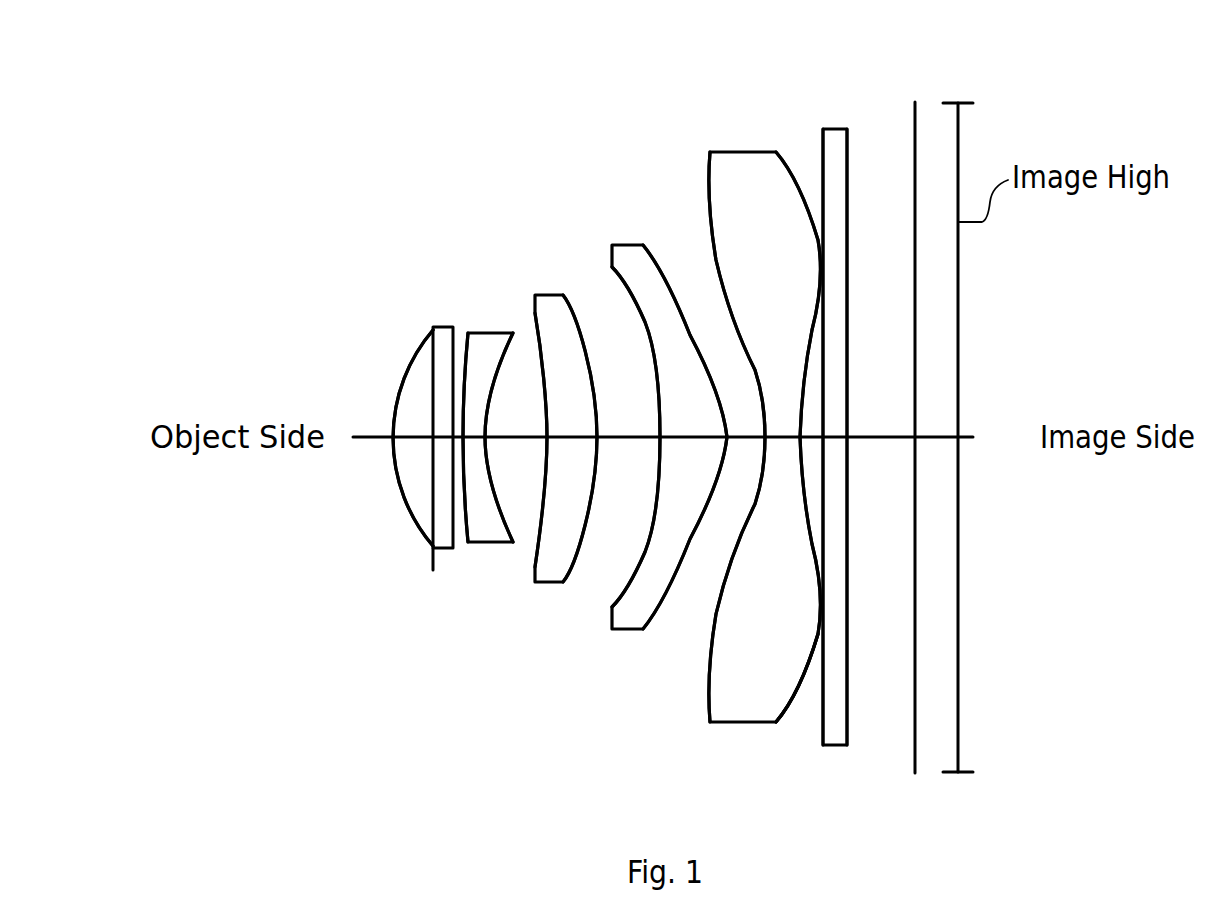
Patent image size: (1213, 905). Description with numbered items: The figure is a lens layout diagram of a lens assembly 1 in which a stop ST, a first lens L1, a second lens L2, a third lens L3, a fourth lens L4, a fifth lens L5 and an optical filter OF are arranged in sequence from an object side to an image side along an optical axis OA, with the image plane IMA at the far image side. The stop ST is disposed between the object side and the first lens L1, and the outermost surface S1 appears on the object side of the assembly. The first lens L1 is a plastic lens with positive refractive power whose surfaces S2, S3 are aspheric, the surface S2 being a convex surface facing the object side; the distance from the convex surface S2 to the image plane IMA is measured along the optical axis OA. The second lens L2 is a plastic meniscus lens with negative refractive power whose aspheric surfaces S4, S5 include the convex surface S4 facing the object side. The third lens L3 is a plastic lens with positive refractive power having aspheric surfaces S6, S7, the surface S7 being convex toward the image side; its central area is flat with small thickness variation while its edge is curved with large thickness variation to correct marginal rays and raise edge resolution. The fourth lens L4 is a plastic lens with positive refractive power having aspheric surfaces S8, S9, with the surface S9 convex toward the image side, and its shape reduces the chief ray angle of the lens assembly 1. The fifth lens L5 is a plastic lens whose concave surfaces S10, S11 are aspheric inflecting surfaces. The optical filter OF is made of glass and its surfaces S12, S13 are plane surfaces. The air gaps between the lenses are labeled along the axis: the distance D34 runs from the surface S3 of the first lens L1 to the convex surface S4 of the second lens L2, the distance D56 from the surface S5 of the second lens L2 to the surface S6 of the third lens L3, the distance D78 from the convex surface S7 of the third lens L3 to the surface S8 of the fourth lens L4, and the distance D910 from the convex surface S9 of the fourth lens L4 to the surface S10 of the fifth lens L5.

The lens assembly 1 is at (233, 134).
The optical axis OA is at (357, 438).
The stop ST is at (433, 327).
The first lens L1 is at (444, 327).
The second lens L2 is at (493, 333).
The third lens L3 is at (550, 295).
The fourth lens L4 is at (622, 245).
The fifth lens L5 is at (740, 152).
The optical filter OF is at (835, 129).
The image plane IMA is at (916, 102).
The object-side surface of first lens S1 is at (433, 570).
The surface S2 is at (405, 498).
The surface S3 is at (433, 570).
The surface S4 is at (478, 545).
The surface S5 is at (487, 545).
The surface S6 is at (540, 548).
The surface S7 is at (578, 565).
The surface S8 is at (624, 607).
The surface S9 is at (672, 583).
The surface S10 is at (728, 607).
The surface S11 is at (806, 700).
The surface S12 is at (823, 738).
The surface S13 is at (848, 718).
The distance D34 is at (457, 438).
The distance D56 is at (520, 440).
The distance D78 is at (617, 438).
The distance D910 is at (742, 437).